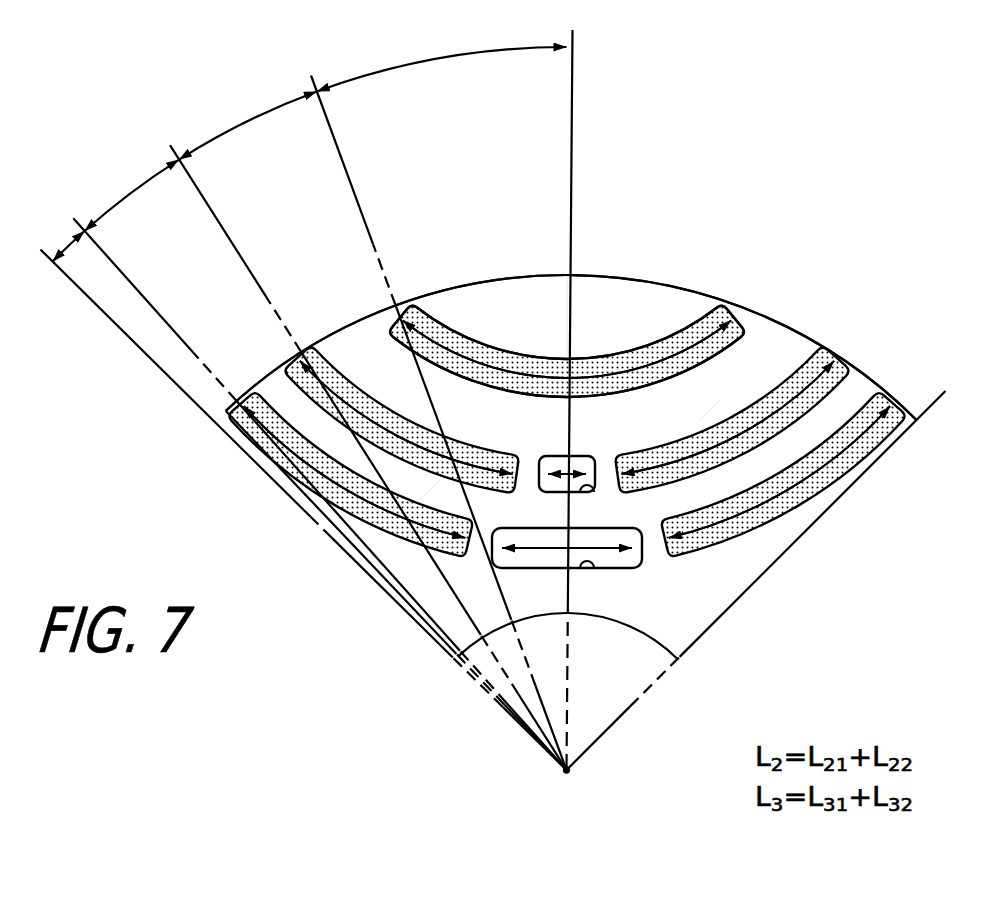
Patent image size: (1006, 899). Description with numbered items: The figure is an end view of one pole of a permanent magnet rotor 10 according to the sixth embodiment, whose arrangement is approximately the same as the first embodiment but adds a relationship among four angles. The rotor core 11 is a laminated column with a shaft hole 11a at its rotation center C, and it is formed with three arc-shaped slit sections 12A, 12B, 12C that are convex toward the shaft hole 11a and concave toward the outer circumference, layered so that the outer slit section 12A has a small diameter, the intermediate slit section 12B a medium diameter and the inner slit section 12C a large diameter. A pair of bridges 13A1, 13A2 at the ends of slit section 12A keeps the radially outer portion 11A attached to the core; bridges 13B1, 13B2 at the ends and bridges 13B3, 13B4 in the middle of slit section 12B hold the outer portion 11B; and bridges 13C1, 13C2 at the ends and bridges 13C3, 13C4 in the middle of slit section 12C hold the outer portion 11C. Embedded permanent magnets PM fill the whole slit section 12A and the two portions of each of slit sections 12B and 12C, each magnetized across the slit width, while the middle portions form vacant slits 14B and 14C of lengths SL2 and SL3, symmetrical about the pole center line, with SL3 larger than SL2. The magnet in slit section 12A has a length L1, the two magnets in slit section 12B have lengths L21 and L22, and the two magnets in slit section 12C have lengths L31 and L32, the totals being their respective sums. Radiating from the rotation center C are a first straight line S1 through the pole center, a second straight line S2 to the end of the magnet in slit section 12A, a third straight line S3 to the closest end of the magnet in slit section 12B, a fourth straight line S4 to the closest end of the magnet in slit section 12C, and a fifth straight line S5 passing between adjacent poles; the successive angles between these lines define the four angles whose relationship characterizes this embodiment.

The permanent magnet rotor 10 is at (742, 228).
The rotor core 11 is at (750, 568).
The shaft hole 11a is at (606, 612).
The radially outer portion 11A is at (598, 320).
The radially outer portion 11B is at (713, 387).
The radially outer portion 11C is at (438, 490).
The slit section 12A is at (455, 345).
The slit section 12B is at (345, 380).
The slit section 12C is at (272, 410).
The bridge 13A1 is at (403, 316).
The bridge 13A2 is at (737, 320).
The bridge 13B1 is at (303, 358).
The bridge 13B2 is at (836, 367).
The bridge 13B3 is at (533, 458).
The bridge 13B4 is at (612, 460).
The bridge 13C1 is at (218, 393).
The bridge 13C2 is at (900, 408).
The bridge 13C3 is at (490, 540).
The bridge 13C4 is at (676, 565).
The vacant slit 14B is at (590, 486).
The vacant slit 14C is at (590, 566).
The length of vacant slit SL2 is at (572, 458).
The length of vacant slit SL3 is at (538, 558).
The permanent magnet PM is at (545, 358).
The length of embedded magnet L1 is at (665, 340).
The length of embedded magnet L21 is at (378, 470).
The length of embedded magnet L22 is at (803, 363).
The length of embedded magnet L31 is at (390, 520).
The length of embedded magnet L32 is at (825, 523).
The first straight line S1 is at (574, 100).
The second straight line S2 is at (340, 148).
The third straight line S3 is at (205, 196).
The fourth straight line S4 is at (103, 252).
The fifth straight line S5 is at (109, 312).
The rotation center C is at (566, 773).